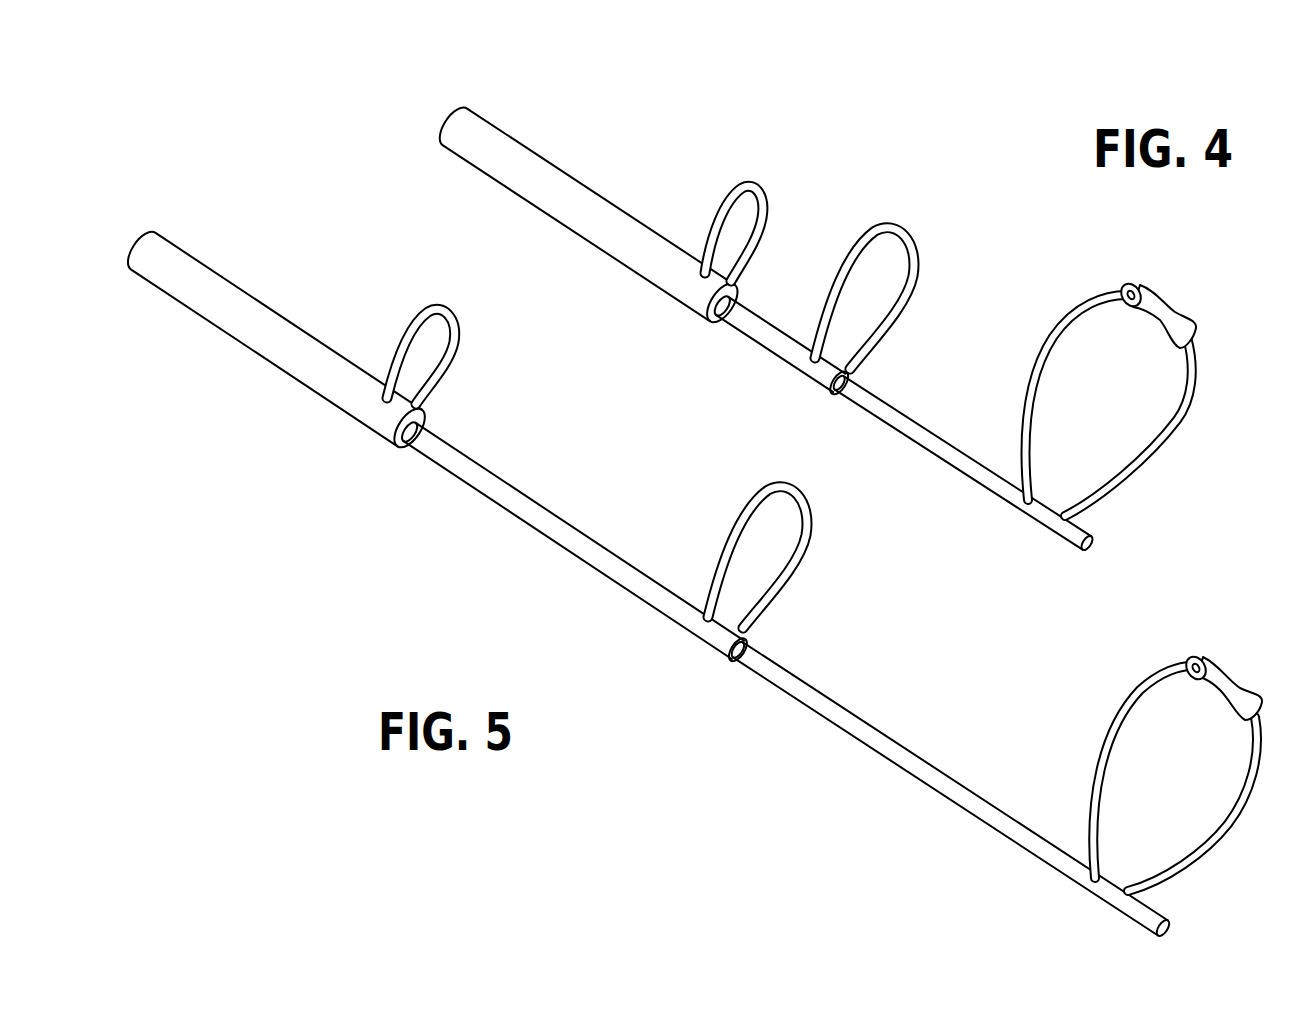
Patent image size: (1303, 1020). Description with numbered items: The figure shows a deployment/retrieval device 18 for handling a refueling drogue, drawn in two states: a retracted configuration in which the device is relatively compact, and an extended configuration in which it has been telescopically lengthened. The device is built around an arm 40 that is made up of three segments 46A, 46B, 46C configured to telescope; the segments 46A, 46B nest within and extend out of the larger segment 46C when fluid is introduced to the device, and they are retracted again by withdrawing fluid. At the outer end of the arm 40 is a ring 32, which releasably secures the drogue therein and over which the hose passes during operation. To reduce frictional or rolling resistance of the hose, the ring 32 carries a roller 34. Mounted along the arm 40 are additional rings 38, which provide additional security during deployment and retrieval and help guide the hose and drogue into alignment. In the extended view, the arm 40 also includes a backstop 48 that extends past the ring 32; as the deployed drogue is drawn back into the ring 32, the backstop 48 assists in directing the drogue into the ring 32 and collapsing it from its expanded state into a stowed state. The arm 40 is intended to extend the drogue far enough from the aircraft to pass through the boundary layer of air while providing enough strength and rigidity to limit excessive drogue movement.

In FIG. 4, the deployment/retrieval device 18 is at (1023, 230).
In FIG. 5, the deployment/retrieval device 18 is at (398, 589).
In FIG. 4, the ring 32 is at (1192, 420).
In FIG. 5, the ring 32 is at (1112, 728).
In FIG. 4, the roller 34 is at (1147, 293).
In FIG. 5, the roller 34 is at (1218, 665).
In FIG. 4, the additional rings 38 is at (763, 195).
In FIG. 5, the additional rings 38 is at (455, 318).
In FIG. 4, the arm 40 is at (736, 349).
In FIG. 5, the arm 40 is at (575, 572).
In FIG. 4, the segment 46A is at (900, 405).
In FIG. 5, the segment 46A is at (856, 709).
In FIG. 4, the segment 46B is at (752, 303).
In FIG. 5, the segment 46B is at (492, 472).
In FIG. 4, the segment 46C is at (603, 197).
In FIG. 5, the segment 46C is at (256, 358).
In FIG. 5, the backstop 48 is at (1110, 906).